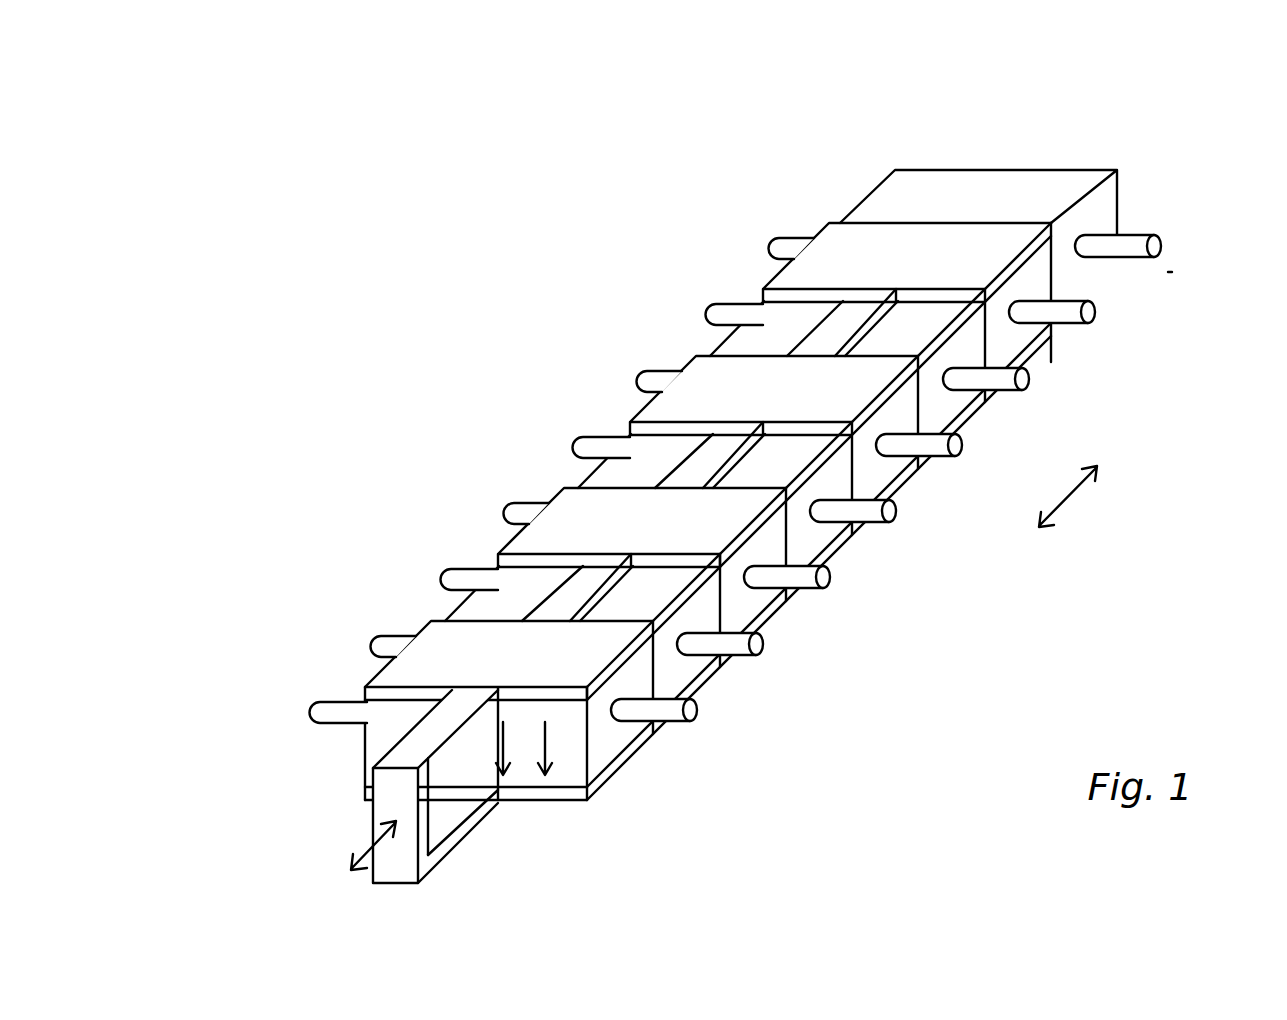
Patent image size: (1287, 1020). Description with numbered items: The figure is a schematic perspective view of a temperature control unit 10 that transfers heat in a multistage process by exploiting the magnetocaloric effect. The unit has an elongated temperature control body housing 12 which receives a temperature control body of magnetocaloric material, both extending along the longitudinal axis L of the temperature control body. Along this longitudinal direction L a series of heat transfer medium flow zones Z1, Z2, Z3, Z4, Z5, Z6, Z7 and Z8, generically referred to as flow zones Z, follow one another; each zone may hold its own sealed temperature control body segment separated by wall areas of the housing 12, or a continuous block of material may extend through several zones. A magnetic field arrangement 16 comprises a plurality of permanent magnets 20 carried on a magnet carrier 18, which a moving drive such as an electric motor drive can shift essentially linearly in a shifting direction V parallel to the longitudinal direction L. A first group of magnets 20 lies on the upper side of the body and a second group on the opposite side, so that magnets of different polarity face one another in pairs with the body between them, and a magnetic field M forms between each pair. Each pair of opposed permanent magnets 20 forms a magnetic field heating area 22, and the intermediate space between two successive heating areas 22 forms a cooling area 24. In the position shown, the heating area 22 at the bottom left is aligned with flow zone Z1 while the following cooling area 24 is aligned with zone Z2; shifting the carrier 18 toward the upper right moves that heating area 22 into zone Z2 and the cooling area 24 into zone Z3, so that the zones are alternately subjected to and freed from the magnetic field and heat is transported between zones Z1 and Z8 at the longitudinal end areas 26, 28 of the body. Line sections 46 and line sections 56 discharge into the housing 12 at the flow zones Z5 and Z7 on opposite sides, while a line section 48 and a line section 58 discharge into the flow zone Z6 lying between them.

The temperature control unit 10 is at (712, 461).
The temperature control body housing 12 is at (1093, 283).
The magnetic field arrangement 16 is at (550, 463).
The magnet carrier 18 is at (541, 793).
The permanent magnet 20 is at (365, 688).
The magnetic field heating area 22 is at (660, 776).
The cooling area 24 is at (527, 851).
The longitudinal end area 26 is at (484, 793).
The longitudinal end area 28 is at (1177, 172).
The line section 46 is at (817, 588).
The line section 48 is at (760, 658).
The line section 56 is at (443, 570).
The line section 58 is at (518, 488).
The heat transfer medium flow zone Z1 is at (684, 548).
The heat transfer medium flow zone Z2 is at (466, 544).
The heat transfer medium flow zone Z3 is at (588, 530).
The heat transfer medium flow zone Z4 is at (659, 305).
The heat transfer medium flow zone Z5 is at (630, 382).
The heat transfer medium flow zone Z6 is at (685, 318).
The heat transfer medium flow zone Z7 is at (924, 284).
The heat transfer medium flow zone Z8 is at (994, 171).
The longitudinal axis L is at (1080, 511).
The shifting direction V is at (353, 857).
The magnetic field M is at (547, 740).
The heat transfer medium flow zone Z is at (1179, 280).